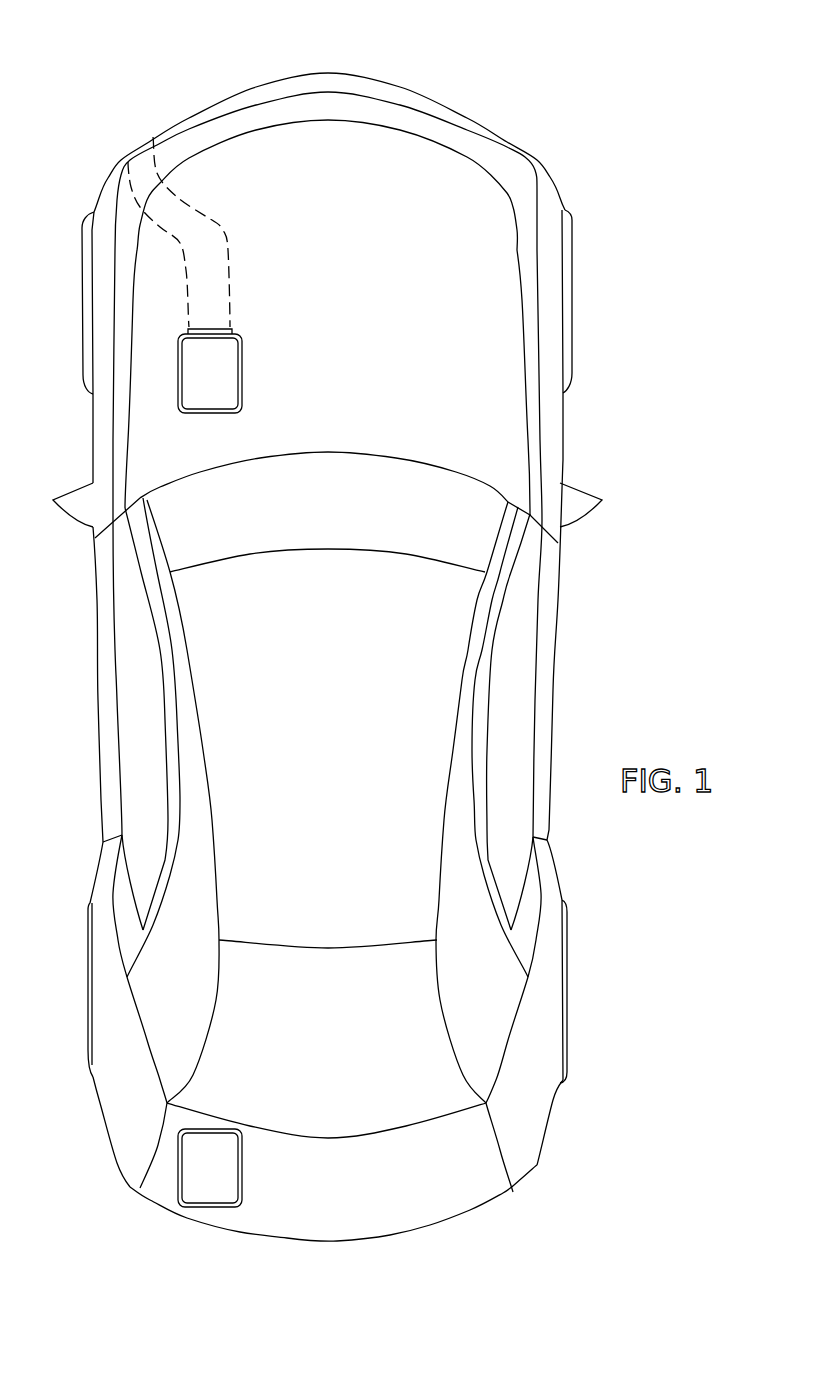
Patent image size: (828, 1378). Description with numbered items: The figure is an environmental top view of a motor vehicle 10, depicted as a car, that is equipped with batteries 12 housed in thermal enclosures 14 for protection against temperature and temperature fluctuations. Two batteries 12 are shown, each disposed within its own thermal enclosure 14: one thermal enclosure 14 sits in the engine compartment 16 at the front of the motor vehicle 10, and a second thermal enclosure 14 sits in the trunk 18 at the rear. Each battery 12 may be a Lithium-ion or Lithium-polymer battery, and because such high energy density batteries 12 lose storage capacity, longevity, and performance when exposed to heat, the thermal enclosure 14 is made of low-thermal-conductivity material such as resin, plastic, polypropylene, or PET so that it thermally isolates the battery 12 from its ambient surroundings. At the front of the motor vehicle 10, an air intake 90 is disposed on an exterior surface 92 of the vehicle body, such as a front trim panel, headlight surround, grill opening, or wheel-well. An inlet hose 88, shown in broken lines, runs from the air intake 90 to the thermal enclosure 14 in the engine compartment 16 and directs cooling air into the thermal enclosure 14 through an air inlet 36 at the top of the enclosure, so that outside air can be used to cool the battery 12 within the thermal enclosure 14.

The motor vehicle 10 is at (353, 677).
The battery 12 is at (222, 368).
The thermal enclosure 14 is at (242, 380).
The engine compartment 16 is at (412, 163).
The trunk 18 is at (413, 1222).
The air inlet 36 is at (187, 337).
The inlet hose 88 is at (223, 230).
The air intake 90 is at (138, 143).
The exterior surface 92 is at (232, 98).